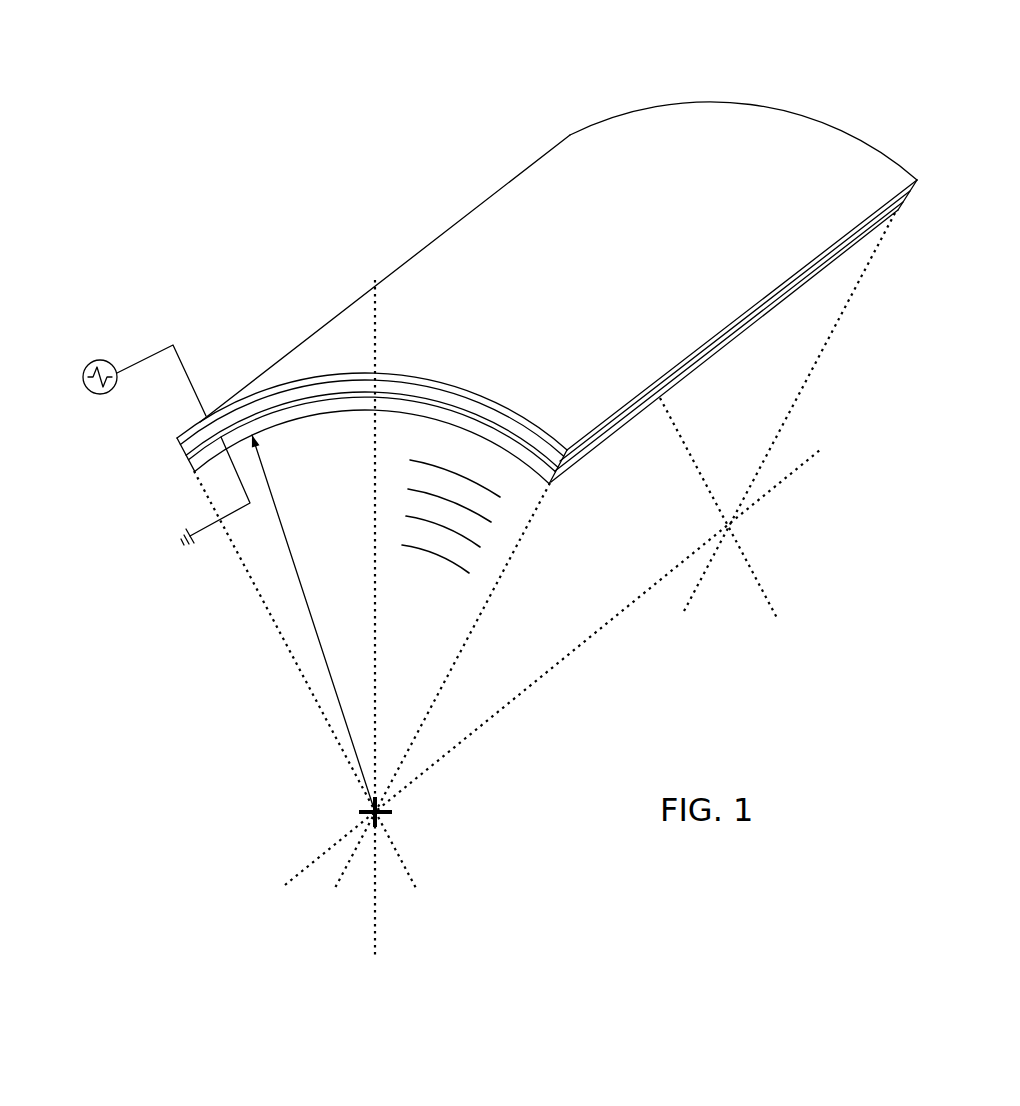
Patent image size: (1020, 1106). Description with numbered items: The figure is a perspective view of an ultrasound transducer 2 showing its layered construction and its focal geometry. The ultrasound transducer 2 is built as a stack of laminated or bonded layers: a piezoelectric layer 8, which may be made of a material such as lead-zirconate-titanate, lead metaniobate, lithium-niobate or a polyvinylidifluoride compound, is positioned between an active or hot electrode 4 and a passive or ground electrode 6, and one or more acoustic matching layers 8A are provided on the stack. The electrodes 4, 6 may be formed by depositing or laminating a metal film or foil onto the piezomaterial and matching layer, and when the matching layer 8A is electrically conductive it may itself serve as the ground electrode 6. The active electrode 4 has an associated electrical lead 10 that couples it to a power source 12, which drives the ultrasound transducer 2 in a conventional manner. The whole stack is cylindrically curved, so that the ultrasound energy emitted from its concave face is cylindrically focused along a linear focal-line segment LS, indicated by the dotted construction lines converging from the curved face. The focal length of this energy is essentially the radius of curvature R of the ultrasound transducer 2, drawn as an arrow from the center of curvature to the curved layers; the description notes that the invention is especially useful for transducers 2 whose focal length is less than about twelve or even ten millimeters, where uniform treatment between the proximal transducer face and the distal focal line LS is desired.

The ultrasound transducer 2 is at (767, 88).
The active electrode 4 is at (410, 378).
The passive electrode 6 is at (312, 398).
The piezoelectric layer 8 is at (180, 443).
The acoustic matching layer 8A is at (553, 483).
The electrical lead 10 is at (188, 373).
The power source 12 is at (85, 392).
The radius of curvature R is at (313, 623).
The focal-line segment LS is at (607, 625).